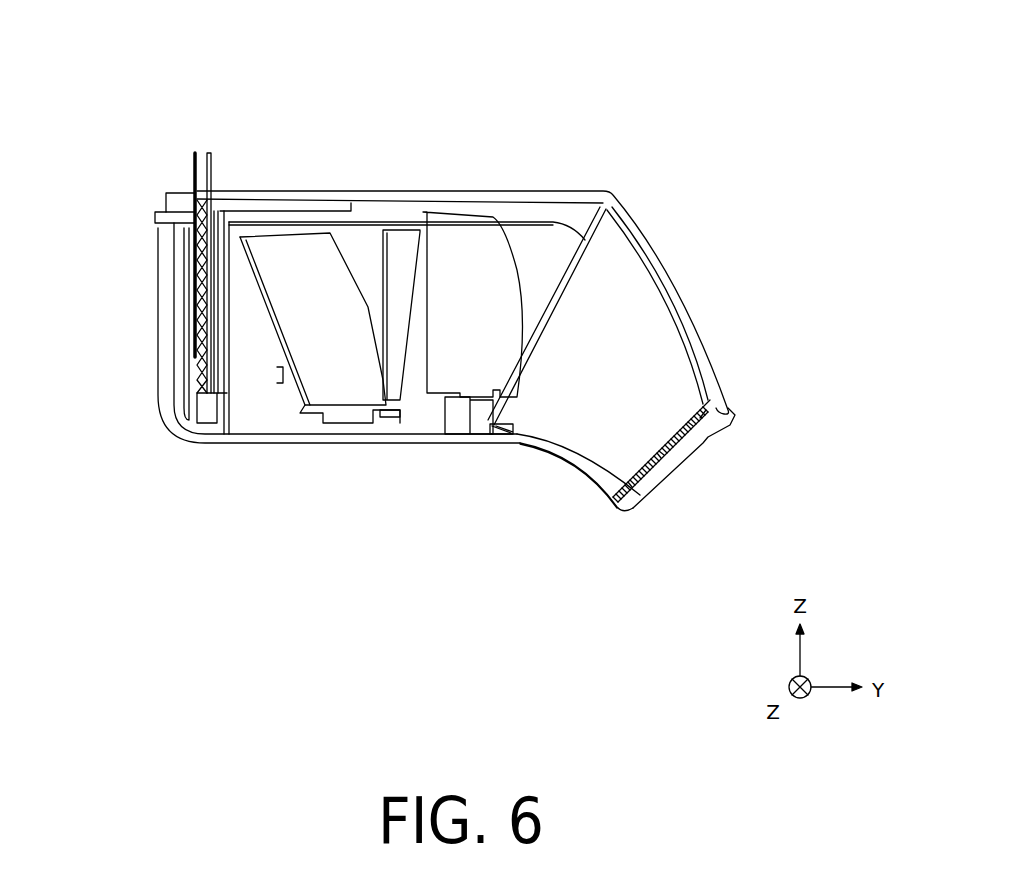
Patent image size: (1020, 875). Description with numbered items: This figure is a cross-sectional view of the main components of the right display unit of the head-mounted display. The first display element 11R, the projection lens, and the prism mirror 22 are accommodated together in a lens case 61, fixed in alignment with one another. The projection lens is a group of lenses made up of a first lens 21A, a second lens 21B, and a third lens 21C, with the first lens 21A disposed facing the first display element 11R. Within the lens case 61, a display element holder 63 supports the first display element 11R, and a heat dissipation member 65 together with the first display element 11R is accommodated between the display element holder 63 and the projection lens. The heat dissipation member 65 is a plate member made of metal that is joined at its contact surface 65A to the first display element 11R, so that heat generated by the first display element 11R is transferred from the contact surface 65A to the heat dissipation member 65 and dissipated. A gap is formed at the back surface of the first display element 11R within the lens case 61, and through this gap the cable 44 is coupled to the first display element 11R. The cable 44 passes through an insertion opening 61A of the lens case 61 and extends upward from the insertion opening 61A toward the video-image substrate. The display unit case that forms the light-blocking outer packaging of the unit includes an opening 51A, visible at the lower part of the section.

The lens case 61 is at (640, 225).
The insertion opening 61A is at (193, 213).
The heat dissipation member 65 is at (165, 230).
The contact surface 65A is at (197, 338).
The cable 44 is at (212, 153).
The display element holder 63 is at (218, 253).
The first display element 11R is at (218, 299).
The first lens 21A is at (278, 323).
The second lens 21B is at (405, 242).
The third lens 21C is at (465, 243).
The prism mirror 22 is at (613, 253).
The opening 51A is at (556, 482).